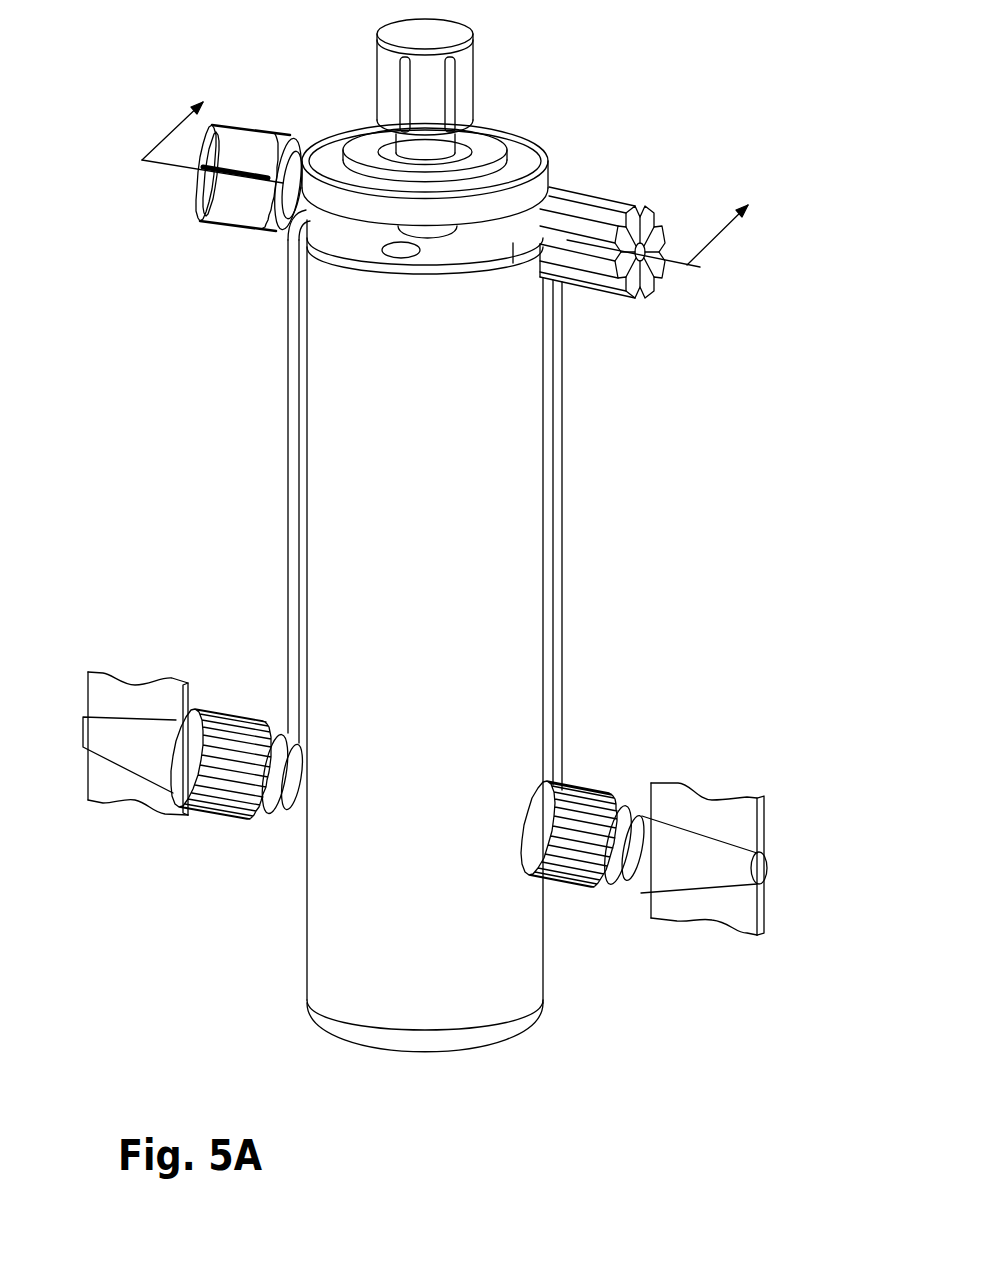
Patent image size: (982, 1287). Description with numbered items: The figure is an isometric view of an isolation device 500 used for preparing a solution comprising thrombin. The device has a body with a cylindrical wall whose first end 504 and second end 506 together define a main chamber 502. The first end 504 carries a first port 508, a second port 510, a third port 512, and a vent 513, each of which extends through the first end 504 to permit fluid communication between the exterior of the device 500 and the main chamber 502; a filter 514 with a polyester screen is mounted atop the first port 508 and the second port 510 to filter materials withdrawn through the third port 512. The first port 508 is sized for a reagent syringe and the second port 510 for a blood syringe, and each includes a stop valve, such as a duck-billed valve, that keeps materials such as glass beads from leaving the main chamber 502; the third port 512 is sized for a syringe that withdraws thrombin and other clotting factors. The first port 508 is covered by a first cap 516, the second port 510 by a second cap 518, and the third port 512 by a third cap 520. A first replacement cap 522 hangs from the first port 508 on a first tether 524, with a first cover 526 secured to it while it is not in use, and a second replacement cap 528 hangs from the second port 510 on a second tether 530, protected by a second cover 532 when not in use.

The isolation device 500 is at (213, 447).
The main chamber 502 is at (323, 910).
The first end 504 is at (342, 265).
The second end 506 is at (373, 1050).
The first port 508 is at (305, 232).
The second port 510 is at (513, 245).
The third port 512 is at (437, 146).
The vent 513 is at (402, 257).
The filter 514 is at (527, 165).
The first cap 516 is at (237, 126).
The second cap 518 is at (608, 197).
The third cap 520 is at (447, 33).
The first replacement cap 522 is at (235, 710).
The first tether 524 is at (289, 540).
The first cover 526 is at (107, 690).
The second replacement cap 528 is at (610, 783).
The second tether 530 is at (563, 558).
The second cover 532 is at (740, 825).